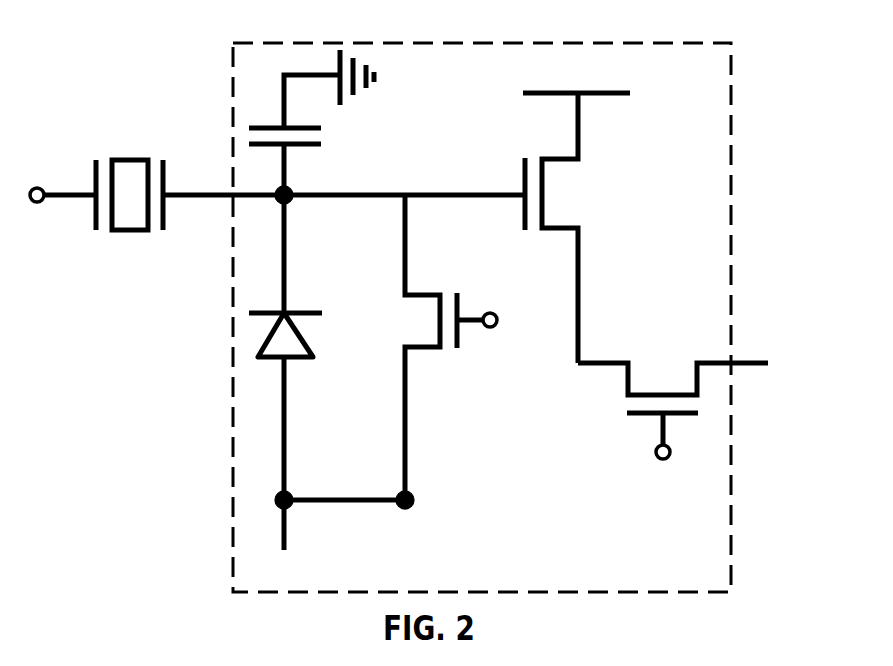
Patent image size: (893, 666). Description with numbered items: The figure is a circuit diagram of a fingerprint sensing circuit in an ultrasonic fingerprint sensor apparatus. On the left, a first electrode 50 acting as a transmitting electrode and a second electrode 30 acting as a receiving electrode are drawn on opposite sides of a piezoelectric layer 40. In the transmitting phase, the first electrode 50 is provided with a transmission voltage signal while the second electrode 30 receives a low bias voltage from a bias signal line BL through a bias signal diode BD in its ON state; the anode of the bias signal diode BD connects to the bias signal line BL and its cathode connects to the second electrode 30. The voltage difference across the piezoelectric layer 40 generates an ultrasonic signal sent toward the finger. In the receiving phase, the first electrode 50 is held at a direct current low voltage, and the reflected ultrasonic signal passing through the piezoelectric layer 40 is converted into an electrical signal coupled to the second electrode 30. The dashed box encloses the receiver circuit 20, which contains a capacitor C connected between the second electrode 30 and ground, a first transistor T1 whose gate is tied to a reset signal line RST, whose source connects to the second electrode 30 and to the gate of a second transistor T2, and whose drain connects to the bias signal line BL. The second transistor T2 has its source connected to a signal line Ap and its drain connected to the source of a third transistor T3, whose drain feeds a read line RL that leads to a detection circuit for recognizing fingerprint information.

The receiver circuit 20 is at (732, 262).
The second electrode 30 is at (344, 188).
The piezoelectric layer 40 is at (128, 160).
The first electrode 50 is at (63, 187).
The capacitor C is at (311, 122).
The bias signal diode BD is at (285, 343).
The first transistor T1 is at (439, 347).
The second transistor T2 is at (576, 228).
The third transistor T3 is at (673, 404).
The reset signal line RST is at (508, 357).
The signal line Ap is at (579, 77).
The read line RL is at (795, 373).
The bias signal line BL is at (344, 536).